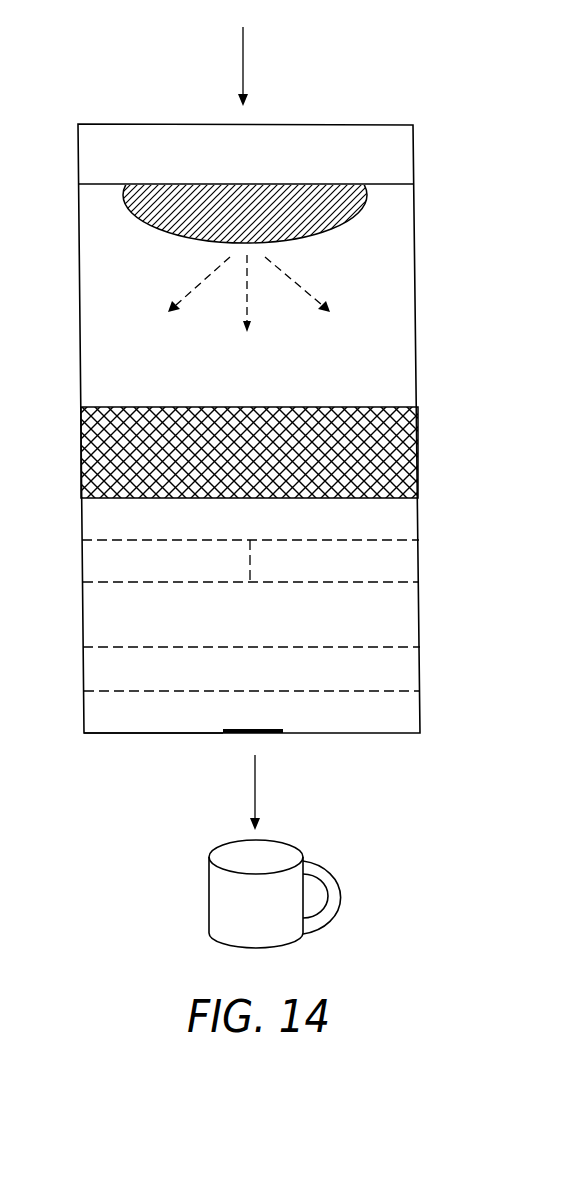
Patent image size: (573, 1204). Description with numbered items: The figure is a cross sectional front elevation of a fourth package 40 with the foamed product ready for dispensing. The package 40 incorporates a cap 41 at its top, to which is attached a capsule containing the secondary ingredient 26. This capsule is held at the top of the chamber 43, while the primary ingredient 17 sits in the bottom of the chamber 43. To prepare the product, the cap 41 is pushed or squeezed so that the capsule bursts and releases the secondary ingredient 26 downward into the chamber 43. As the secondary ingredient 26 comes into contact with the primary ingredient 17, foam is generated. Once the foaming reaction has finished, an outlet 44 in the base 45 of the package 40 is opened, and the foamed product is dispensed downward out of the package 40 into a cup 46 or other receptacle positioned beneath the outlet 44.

The primary ingredient 17 is at (398, 563).
The secondary ingredient 26 is at (329, 231).
The package 40 is at (434, 301).
The cap 41 is at (393, 152).
The chamber 43 is at (398, 378).
The outlet 44 is at (248, 733).
The base 45 is at (127, 734).
The cup 46 is at (209, 893).